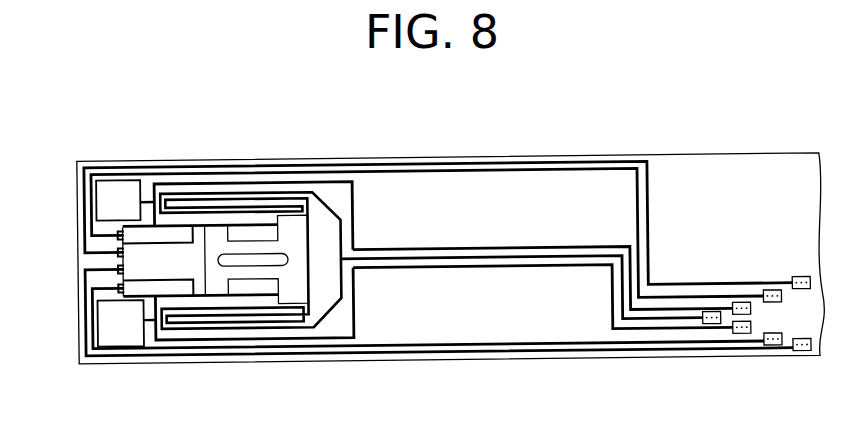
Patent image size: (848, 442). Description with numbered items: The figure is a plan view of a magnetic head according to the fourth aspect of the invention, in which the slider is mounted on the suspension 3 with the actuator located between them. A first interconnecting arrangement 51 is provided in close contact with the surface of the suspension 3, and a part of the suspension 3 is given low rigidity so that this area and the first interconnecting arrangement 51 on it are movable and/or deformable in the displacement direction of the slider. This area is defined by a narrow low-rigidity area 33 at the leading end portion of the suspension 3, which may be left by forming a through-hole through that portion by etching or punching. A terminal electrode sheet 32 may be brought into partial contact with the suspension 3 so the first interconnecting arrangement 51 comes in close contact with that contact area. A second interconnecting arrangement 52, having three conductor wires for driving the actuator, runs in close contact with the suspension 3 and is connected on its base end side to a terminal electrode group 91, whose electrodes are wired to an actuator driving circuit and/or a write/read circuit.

The suspension 3 is at (746, 160).
The terminal electrode sheet 32 is at (98, 258).
The low-rigidity area 33 is at (104, 161).
The first interconnecting arrangement 51 is at (433, 159).
The second interconnecting arrangement 52 is at (572, 266).
The terminal electrode group 91 is at (807, 361).